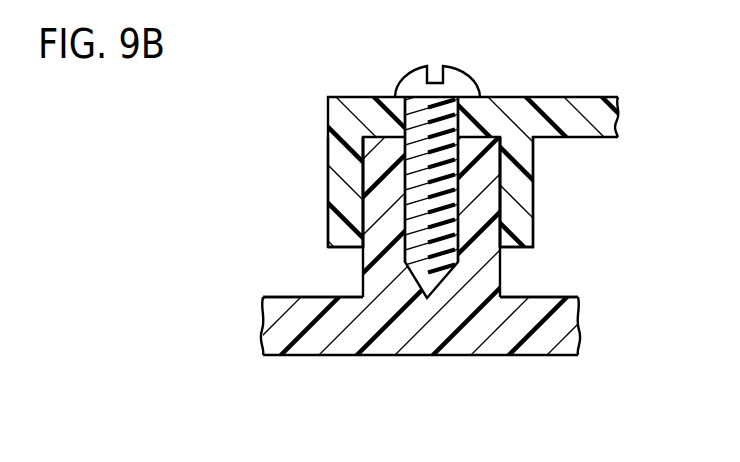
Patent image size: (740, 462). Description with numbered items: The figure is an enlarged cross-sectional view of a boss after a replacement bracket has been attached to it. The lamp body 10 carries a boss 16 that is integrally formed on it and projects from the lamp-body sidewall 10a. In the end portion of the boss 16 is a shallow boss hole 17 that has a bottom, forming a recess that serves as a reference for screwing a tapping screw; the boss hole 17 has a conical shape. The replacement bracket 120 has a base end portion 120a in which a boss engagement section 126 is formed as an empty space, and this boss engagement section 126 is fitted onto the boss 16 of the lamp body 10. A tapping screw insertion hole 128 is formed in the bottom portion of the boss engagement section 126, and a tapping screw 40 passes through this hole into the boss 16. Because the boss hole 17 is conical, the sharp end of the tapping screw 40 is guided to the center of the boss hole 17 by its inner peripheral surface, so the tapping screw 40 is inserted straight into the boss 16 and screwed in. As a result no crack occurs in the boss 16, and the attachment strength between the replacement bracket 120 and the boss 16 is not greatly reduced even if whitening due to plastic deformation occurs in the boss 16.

The lamp body 10 is at (417, 362).
The lamp-body sidewall 10a is at (548, 297).
The boss 16 is at (487, 178).
The boss hole 17 is at (402, 139).
The tapping screw 40 is at (458, 66).
The replacement bracket 120 is at (561, 95).
The base end portion 120a is at (324, 153).
The boss engagement section 126 is at (378, 210).
The tapping screw insertion hole 128 is at (411, 106).